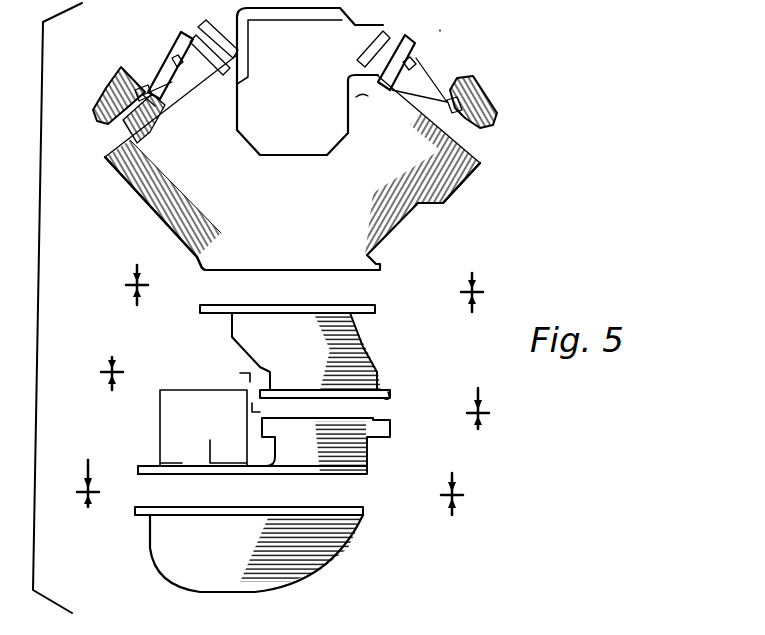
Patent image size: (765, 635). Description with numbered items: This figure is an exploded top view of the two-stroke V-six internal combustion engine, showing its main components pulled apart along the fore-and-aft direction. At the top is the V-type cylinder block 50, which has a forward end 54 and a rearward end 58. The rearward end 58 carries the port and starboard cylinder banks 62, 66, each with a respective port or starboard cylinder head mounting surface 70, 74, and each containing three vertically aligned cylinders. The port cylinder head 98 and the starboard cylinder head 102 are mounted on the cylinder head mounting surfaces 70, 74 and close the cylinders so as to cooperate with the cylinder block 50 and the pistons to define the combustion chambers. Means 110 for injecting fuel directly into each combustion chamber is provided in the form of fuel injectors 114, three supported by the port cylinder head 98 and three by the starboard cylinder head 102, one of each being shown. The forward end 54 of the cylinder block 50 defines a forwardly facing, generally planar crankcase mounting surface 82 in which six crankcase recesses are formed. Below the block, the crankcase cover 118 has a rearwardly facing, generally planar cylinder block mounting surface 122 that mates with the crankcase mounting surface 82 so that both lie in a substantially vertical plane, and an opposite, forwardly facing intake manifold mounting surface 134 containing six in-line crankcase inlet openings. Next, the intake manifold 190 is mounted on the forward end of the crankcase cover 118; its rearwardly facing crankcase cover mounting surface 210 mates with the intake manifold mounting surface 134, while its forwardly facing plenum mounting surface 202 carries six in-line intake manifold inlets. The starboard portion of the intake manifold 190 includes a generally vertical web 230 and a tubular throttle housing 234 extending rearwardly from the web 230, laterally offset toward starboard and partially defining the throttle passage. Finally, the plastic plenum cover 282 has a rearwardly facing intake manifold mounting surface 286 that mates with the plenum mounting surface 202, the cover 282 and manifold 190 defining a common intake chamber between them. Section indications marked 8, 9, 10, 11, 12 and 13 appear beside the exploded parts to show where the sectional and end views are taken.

The V-type cylinder block 50 is at (277, 213).
The forward end 54 is at (345, 243).
The rearward end 58 is at (383, 115).
The port cylinder bank 62 is at (440, 200).
The starboard cylinder bank 66 is at (150, 198).
The port cylinder head mounting surface 70 is at (450, 176).
The starboard cylinder head mounting surface 74 is at (127, 165).
The crankcase mounting surface 82 is at (205, 270).
The port cylinder head 98 is at (480, 155).
The starboard cylinder head 102 is at (132, 140).
The means for injecting fuel 110 is at (440, 69).
The fuel injector 114 is at (176, 66).
The crankcase cover 118 is at (232, 327).
The cylinder block mounting surface 122 is at (368, 301).
The intake manifold mounting surface 134 is at (381, 400).
The intake manifold 190 is at (350, 463).
The plenum mounting surface 202 is at (140, 478).
The crankcase cover mounting surface 210 is at (332, 418).
The web 230 is at (230, 477).
The throttle housing 234 is at (197, 397).
The plenum cover 282 is at (308, 540).
The intake manifold mounting surface 286 is at (188, 507).
The section line 8 is at (265, 522).
The section line 9 is at (270, 475).
The section line 10 is at (290, 420).
The section line 11 is at (296, 378).
The section line 12 is at (305, 319).
The section line 13 is at (303, 276).